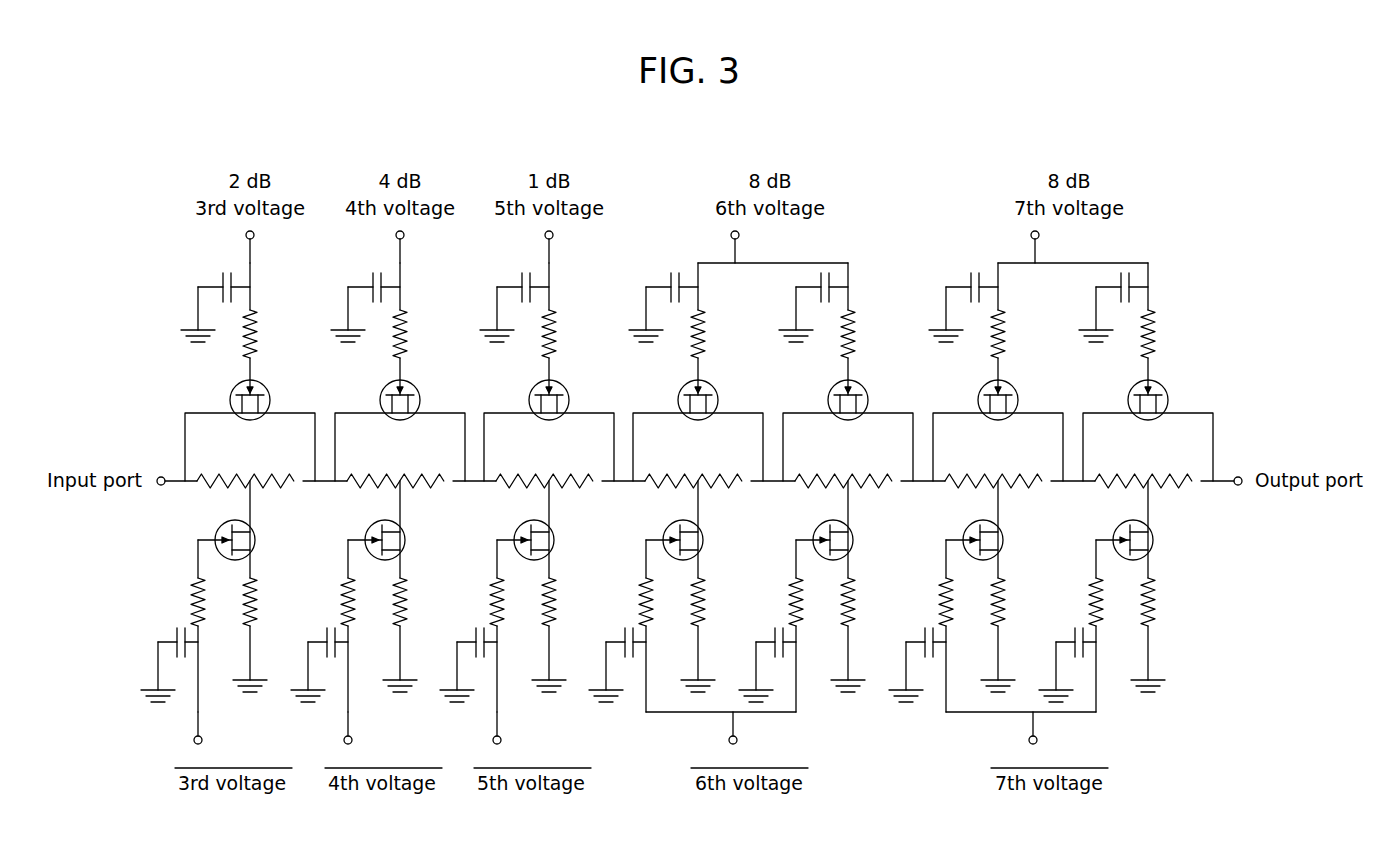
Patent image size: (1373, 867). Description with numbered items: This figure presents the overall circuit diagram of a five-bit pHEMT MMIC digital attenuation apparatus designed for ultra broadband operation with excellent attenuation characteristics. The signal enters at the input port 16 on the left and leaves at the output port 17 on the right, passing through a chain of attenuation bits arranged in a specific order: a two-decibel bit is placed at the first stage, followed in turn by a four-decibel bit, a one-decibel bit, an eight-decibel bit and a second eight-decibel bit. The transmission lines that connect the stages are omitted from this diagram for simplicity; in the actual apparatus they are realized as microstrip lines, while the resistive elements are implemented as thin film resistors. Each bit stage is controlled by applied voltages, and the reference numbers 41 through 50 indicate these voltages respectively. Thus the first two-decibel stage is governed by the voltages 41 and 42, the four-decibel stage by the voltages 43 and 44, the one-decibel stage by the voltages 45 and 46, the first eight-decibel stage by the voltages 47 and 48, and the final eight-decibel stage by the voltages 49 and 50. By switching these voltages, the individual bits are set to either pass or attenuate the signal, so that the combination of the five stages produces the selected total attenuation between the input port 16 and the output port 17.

The input port 16 is at (160, 477).
The output port 17 is at (1238, 477).
The voltage 41 is at (255, 235).
The voltage 42 is at (203, 740).
The voltage 43 is at (405, 235).
The voltage 44 is at (353, 740).
The voltage 45 is at (554, 235).
The voltage 46 is at (502, 740).
The voltage 47 is at (740, 235).
The voltage 48 is at (738, 740).
The voltage 49 is at (1040, 235).
The voltage 50 is at (1038, 740).